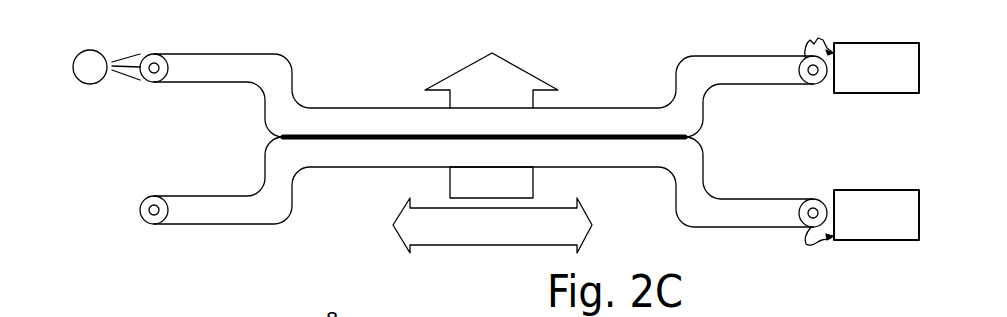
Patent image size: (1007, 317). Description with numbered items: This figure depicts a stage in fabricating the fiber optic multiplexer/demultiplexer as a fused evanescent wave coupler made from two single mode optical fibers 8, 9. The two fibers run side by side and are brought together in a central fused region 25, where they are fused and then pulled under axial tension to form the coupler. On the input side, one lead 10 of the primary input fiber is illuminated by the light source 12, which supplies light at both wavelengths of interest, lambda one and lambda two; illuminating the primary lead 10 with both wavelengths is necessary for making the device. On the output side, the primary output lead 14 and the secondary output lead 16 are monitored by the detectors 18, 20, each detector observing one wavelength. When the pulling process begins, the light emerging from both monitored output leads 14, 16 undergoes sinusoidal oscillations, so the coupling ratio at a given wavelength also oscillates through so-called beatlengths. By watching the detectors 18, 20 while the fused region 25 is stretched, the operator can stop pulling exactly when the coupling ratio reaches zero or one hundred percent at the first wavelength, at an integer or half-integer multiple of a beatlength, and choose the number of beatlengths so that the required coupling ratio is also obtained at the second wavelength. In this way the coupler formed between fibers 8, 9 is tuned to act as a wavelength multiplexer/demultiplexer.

The single mode optical fiber 8 is at (286, 61).
The single mode optical fiber 9 is at (286, 216).
The primary input lead 10 is at (161, 54).
The light source 12 is at (90, 84).
The primary output lead 14 is at (803, 55).
The secondary output lead 16 is at (803, 228).
The detector 18 is at (872, 95).
The detector 20 is at (880, 242).
The fused coupling region 25 is at (562, 57).